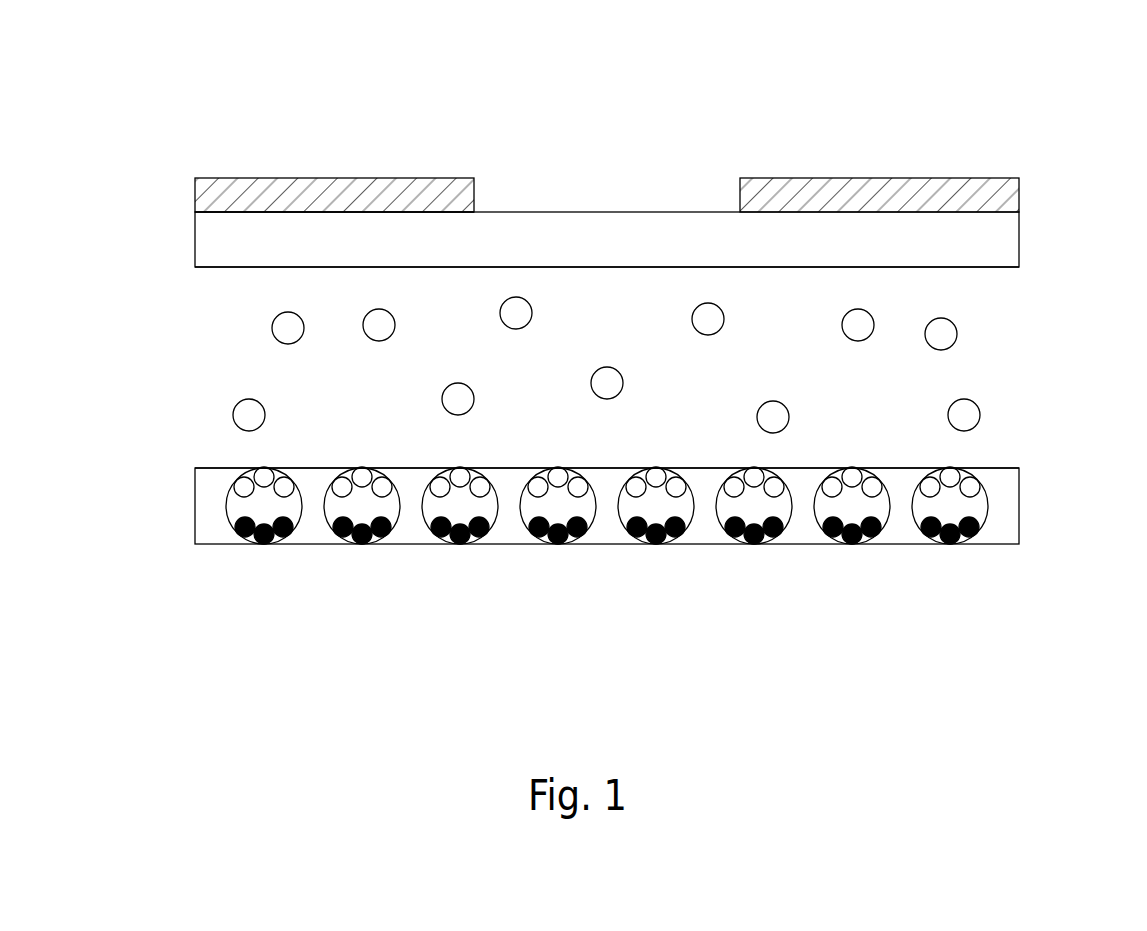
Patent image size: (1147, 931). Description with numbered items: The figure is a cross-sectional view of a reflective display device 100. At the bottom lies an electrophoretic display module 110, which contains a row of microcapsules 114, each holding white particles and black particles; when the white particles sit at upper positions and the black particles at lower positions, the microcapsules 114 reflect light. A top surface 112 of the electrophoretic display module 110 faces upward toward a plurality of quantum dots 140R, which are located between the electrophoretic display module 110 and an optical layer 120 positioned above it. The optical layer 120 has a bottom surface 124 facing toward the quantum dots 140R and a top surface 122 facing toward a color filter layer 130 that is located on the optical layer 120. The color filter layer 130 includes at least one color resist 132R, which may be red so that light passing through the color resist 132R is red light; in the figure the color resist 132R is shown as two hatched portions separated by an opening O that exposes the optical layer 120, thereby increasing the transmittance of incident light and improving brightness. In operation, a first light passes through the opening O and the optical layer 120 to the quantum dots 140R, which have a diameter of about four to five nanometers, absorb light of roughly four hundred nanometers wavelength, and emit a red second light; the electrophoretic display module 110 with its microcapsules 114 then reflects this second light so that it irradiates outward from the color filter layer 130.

The reflective display device 100 is at (107, 78).
The electrophoretic display module 110 is at (1022, 508).
The top surface of the electrophoretic display module 112 is at (224, 466).
The microcapsules 114 is at (228, 505).
The optical layer 120 is at (1022, 240).
The top surface of the optical layer 122 is at (232, 206).
The bottom surface of the optical layer 124 is at (229, 269).
The color filter layer 130 is at (662, 159).
The color resist 132R is at (331, 188).
The quantum dot 140R is at (625, 378).
The opening O is at (601, 186).